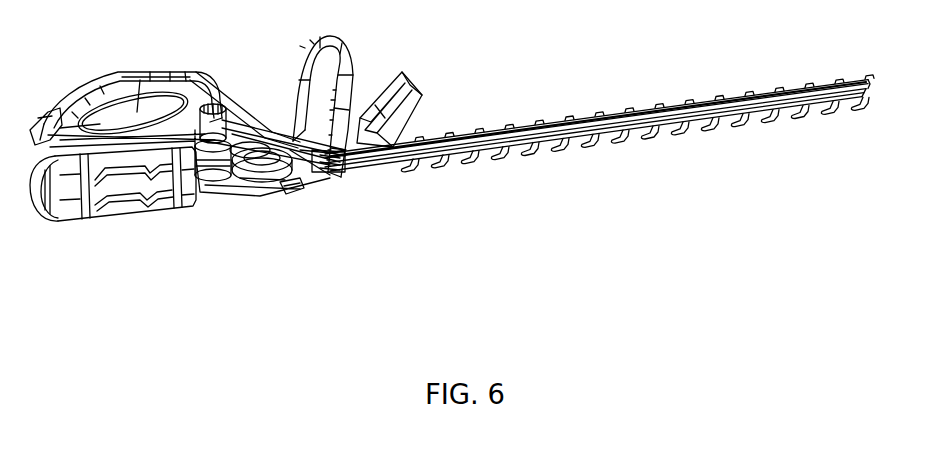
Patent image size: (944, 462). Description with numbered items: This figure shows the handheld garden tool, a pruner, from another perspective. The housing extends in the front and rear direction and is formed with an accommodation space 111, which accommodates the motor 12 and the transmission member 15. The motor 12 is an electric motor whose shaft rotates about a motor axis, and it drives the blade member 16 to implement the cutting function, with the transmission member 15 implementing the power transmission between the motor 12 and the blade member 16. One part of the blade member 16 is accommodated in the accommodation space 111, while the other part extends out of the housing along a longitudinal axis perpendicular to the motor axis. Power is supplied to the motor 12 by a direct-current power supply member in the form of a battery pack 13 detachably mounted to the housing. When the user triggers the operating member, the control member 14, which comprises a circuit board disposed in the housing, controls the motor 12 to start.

The motor 12 is at (218, 85).
The battery pack 13 is at (138, 190).
The control member 14 is at (140, 80).
The transmission member 15 is at (232, 195).
The blade member 16 is at (525, 125).
The accommodation space 111 is at (290, 185).